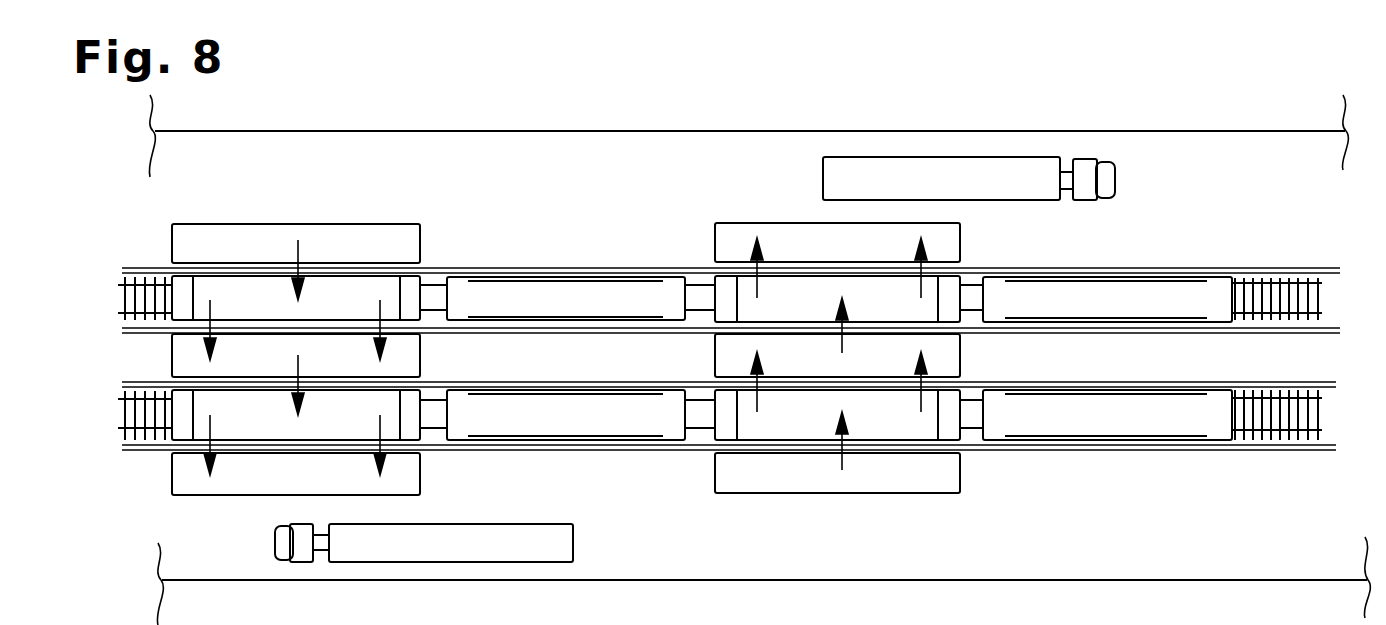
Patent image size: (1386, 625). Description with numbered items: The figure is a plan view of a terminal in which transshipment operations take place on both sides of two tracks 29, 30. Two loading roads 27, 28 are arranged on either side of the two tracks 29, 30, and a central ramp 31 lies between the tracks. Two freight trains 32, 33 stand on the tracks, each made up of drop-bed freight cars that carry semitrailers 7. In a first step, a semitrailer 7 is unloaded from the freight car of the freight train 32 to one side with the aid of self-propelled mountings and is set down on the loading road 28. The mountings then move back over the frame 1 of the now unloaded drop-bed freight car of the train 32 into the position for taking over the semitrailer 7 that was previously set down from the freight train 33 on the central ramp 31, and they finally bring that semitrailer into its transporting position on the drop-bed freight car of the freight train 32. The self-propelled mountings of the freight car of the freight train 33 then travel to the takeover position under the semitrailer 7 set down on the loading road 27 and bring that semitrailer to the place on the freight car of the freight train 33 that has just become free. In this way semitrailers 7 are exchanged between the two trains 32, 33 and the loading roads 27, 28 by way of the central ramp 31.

The frame 1 is at (948, 290).
The semitrailer 7 is at (736, 238).
The loading road 27 is at (1113, 539).
The loading road 28 is at (597, 201).
The track 29 is at (1262, 285).
The track 30 is at (1283, 412).
The central ramp 31 is at (1051, 367).
The freight train 32 is at (458, 276).
The freight train 33 is at (606, 442).